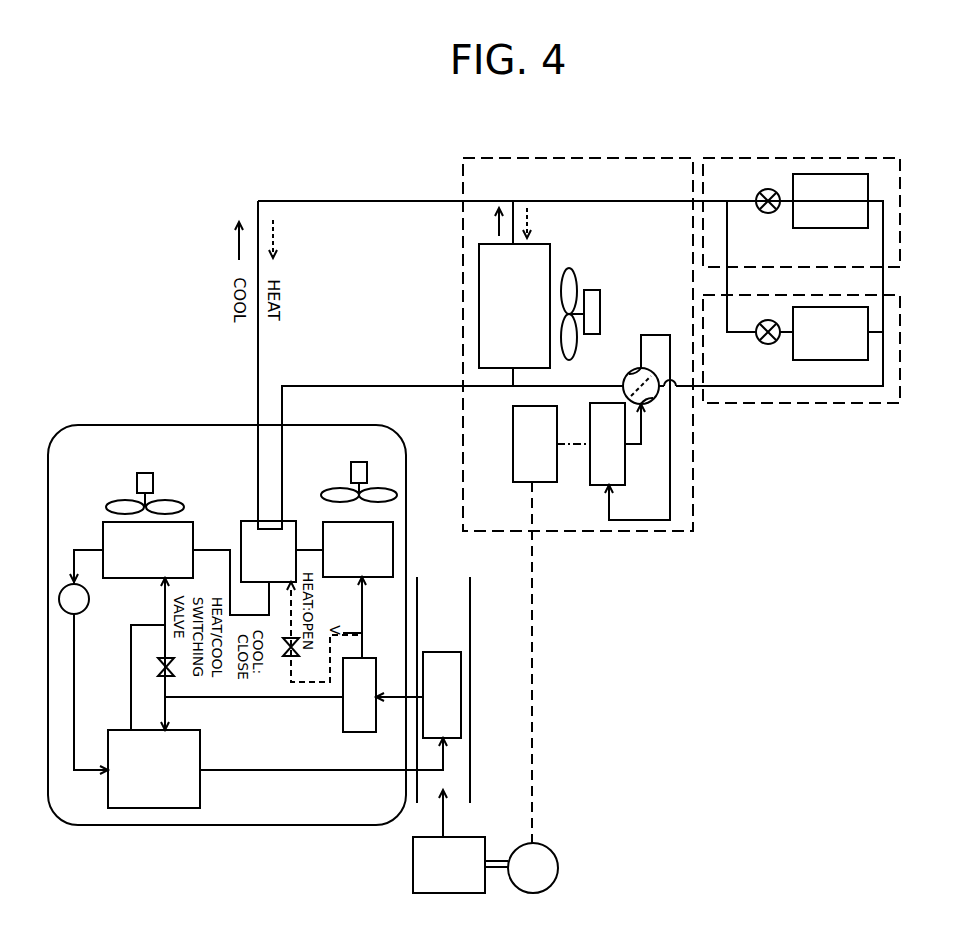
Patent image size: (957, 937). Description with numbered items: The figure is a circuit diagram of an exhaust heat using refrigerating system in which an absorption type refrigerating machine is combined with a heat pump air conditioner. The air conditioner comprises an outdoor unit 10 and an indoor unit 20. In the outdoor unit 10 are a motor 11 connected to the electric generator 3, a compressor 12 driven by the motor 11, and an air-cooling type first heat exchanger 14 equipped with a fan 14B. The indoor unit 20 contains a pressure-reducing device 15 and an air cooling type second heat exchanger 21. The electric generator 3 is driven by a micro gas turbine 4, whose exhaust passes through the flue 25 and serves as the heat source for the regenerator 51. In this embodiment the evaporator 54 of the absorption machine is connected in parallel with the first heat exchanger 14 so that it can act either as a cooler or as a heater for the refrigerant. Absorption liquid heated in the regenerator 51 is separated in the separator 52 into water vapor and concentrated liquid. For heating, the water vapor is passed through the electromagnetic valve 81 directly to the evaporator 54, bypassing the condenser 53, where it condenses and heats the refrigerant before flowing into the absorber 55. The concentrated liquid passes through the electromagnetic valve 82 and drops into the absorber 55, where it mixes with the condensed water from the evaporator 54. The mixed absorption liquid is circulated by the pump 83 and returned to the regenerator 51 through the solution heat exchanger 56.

The electric generator 3 is at (558, 860).
The micro gas turbine 4 is at (413, 855).
The outdoor unit 10 is at (598, 158).
The motor 11 is at (548, 482).
The compressor 12 is at (606, 485).
The first heat exchanger 14 is at (490, 244).
The fan 14B is at (578, 283).
The pressure-reducing device 15 is at (770, 189).
The indoor unit 20 is at (848, 158).
The second heat exchanger 21 is at (868, 190).
The flue 25 is at (470, 595).
The regenerator 51 is at (461, 697).
The separator 52 is at (345, 730).
The condenser 53 is at (380, 577).
The evaporator 54 is at (292, 521).
The absorber 55 is at (193, 530).
The solution heat exchanger 56 is at (200, 795).
The electromagnetic valve 81 is at (288, 665).
The electromagnetic valve 82 is at (160, 676).
The pump 83 is at (59, 596).